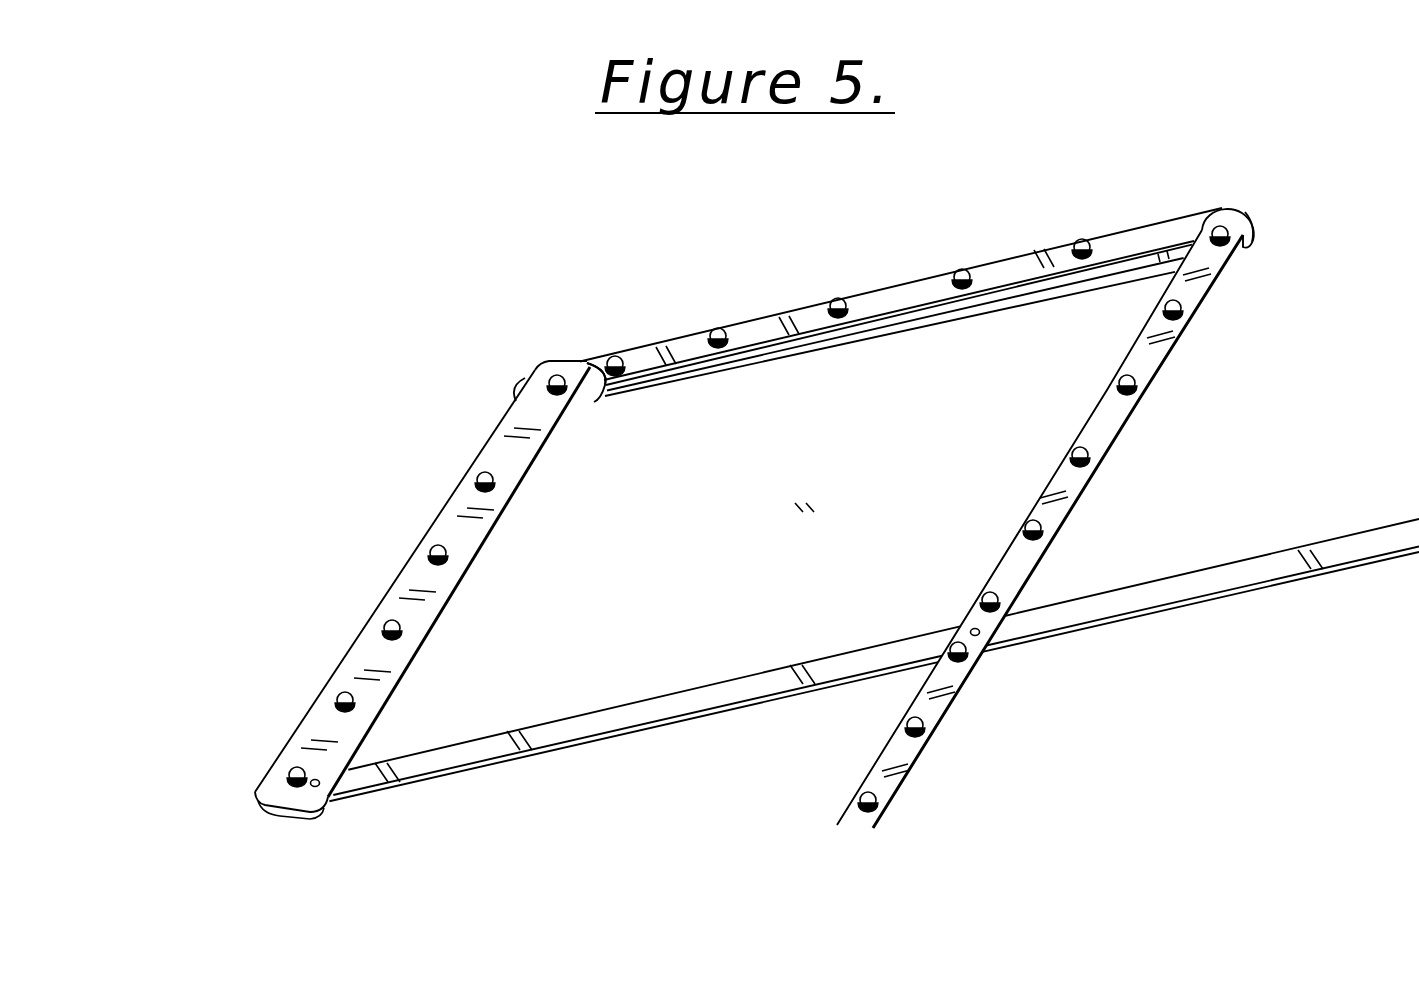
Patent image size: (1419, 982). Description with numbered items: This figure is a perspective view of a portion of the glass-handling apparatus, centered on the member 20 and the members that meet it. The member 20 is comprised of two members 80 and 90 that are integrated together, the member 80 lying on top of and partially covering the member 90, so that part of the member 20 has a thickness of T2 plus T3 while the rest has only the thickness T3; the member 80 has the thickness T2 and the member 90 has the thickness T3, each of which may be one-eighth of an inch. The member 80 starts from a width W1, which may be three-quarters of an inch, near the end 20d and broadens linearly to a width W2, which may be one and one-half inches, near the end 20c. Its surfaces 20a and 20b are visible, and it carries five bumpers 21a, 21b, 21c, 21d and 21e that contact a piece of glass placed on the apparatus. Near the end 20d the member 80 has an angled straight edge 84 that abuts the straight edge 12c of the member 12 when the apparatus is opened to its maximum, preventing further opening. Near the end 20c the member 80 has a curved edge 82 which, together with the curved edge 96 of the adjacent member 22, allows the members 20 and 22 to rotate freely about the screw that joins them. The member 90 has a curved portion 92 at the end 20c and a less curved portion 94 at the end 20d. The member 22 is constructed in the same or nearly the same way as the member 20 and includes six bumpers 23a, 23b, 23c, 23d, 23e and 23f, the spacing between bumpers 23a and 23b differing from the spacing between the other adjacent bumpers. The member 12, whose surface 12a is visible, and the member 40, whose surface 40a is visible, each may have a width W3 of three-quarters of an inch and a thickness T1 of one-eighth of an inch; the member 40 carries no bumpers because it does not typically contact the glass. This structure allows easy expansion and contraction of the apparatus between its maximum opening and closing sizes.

The member 12 is at (1105, 425).
The surface of member 12 12a is at (1148, 357).
The straight edge of member 12 12c is at (1217, 217).
The member 20 is at (890, 300).
The surface of member 20 20a is at (758, 335).
The surface of member 20 20b is at (1082, 265).
The end of member 20 20c is at (570, 403).
The end of member 20 20d is at (1254, 235).
The bumper 21a is at (1083, 243).
The bumper 21b is at (962, 273).
The bumper 21c is at (838, 302).
The bumper 21d is at (718, 332).
The bumper 21e is at (615, 360).
The member 22 is at (460, 532).
The bumper 23a is at (557, 380).
The bumper 23b is at (485, 477).
The bumper 23c is at (438, 549).
The bumper 23d is at (390, 625).
The bumper 23e is at (343, 697).
The bumper 23f is at (295, 773).
The member 40 is at (556, 735).
The surface of member 40 40a is at (752, 690).
The member 80 is at (1005, 272).
The curved edge 82 is at (598, 402).
The straight edge 84 is at (1225, 218).
The member 90 is at (960, 320).
The curved portion 92 is at (512, 393).
The less curved portion 94 is at (1256, 249).
The curved edge 96 is at (562, 360).
The thickness T1 is at (838, 717).
The thickness T2 is at (807, 372).
The thickness T3 is at (932, 268).
The width W1 is at (1186, 213).
The width W2 is at (575, 341).
The width W3 is at (1072, 568).